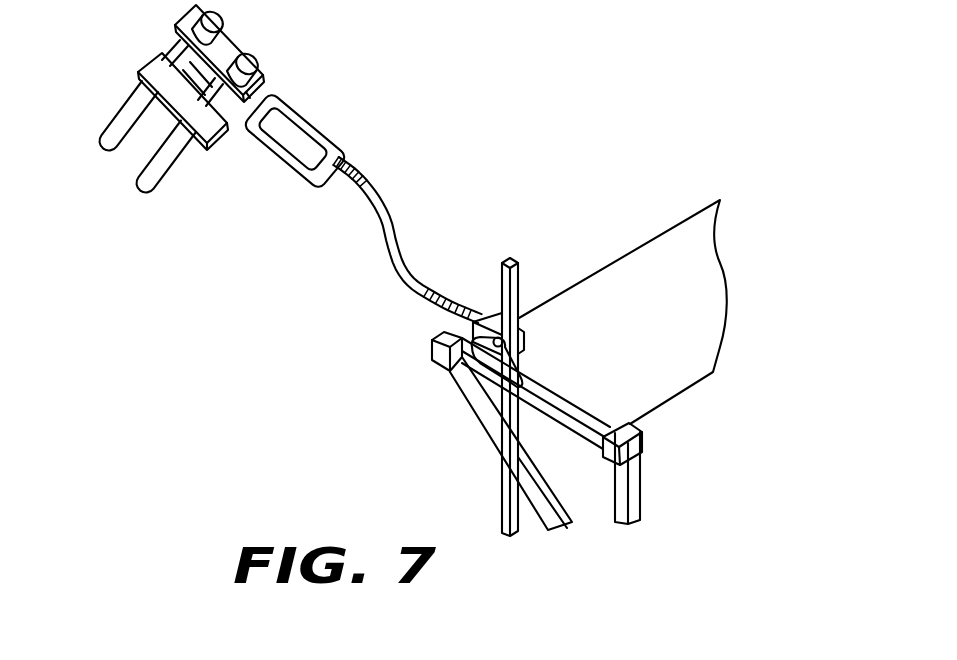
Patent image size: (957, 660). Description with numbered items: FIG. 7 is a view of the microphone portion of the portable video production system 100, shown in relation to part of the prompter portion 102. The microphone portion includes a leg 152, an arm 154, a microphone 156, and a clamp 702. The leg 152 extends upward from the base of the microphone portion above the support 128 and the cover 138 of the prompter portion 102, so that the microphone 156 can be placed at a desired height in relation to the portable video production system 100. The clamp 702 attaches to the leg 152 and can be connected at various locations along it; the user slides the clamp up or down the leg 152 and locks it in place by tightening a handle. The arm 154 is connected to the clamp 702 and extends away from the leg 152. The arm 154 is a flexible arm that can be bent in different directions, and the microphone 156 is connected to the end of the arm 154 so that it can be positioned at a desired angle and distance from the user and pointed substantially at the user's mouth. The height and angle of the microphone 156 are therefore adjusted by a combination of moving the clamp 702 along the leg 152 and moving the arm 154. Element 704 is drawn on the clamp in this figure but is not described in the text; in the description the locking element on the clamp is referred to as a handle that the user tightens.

The portable video production system 100 is at (749, 57).
The prompter portion 102 is at (745, 183).
The support 128 is at (572, 425).
The cover 138 is at (628, 378).
The leg 152 is at (502, 514).
The arm 154 is at (385, 207).
The microphone 156 is at (128, 103).
The clamp 702 is at (483, 310).
The clamp lever 704 is at (487, 360).